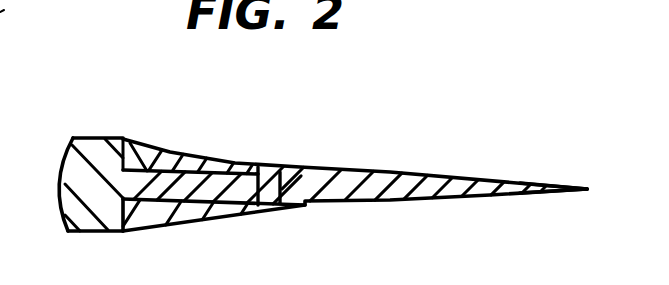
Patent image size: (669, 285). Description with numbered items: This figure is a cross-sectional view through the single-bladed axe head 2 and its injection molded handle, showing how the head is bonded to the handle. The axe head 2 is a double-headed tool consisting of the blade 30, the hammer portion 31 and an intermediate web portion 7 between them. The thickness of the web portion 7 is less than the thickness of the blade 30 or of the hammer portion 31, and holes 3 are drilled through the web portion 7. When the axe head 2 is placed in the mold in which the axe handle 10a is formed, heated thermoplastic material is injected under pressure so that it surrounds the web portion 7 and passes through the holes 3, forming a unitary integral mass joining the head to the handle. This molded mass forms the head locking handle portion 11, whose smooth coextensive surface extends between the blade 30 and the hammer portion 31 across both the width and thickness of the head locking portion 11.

The axe head 2 is at (478, 177).
The holes 3 is at (271, 175).
The web portion 7 is at (210, 212).
The axe handle 10a is at (182, 152).
The head locking handle portion 11 is at (136, 162).
The blade 30 is at (377, 172).
The hammer portion 31 is at (77, 181).